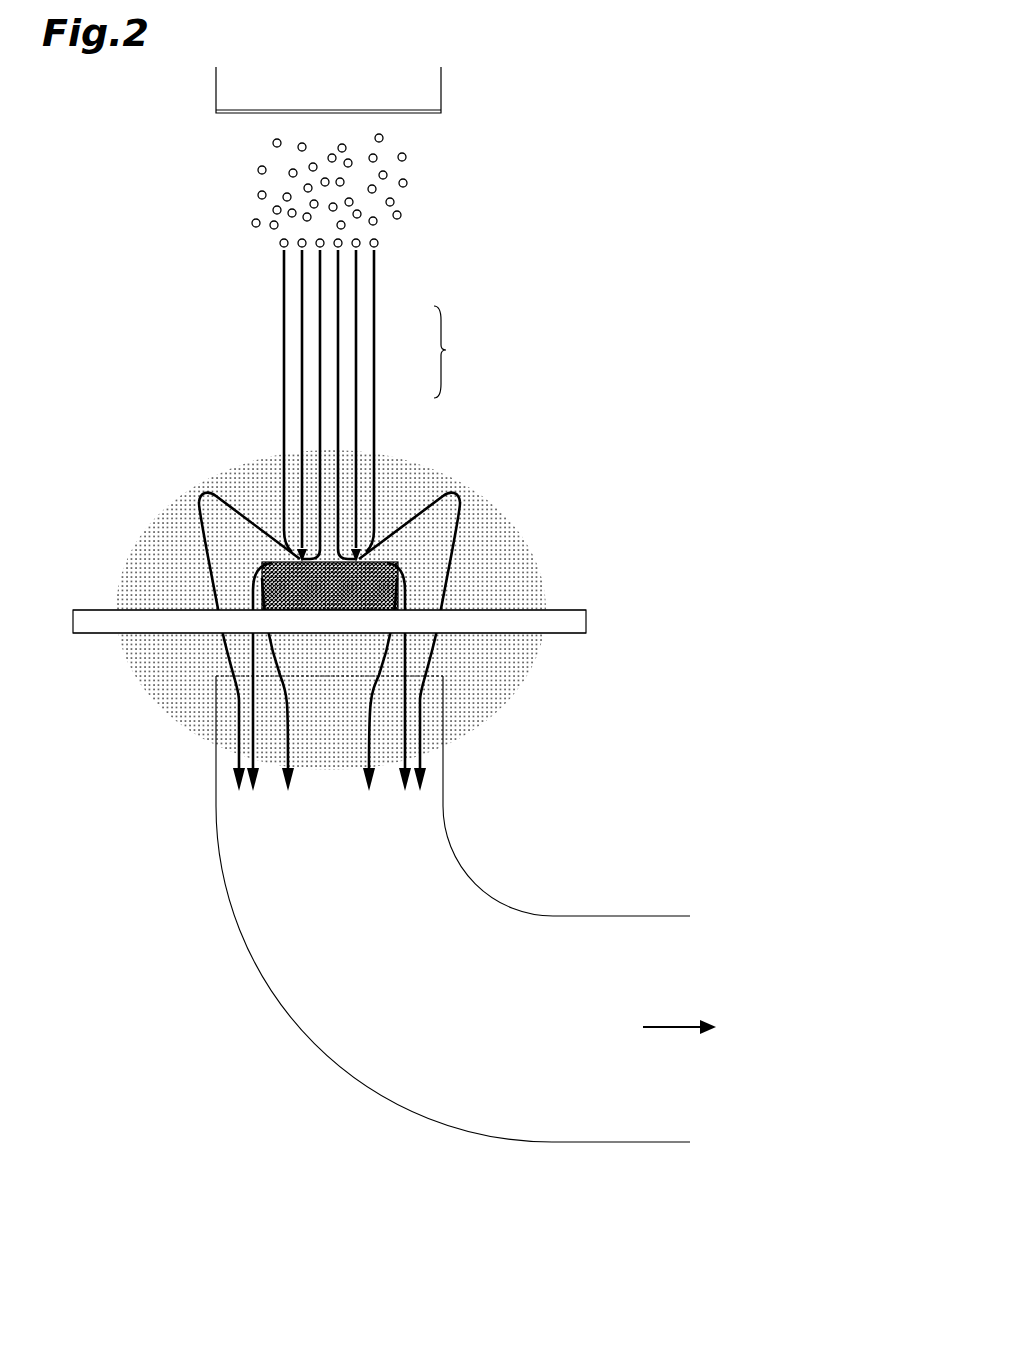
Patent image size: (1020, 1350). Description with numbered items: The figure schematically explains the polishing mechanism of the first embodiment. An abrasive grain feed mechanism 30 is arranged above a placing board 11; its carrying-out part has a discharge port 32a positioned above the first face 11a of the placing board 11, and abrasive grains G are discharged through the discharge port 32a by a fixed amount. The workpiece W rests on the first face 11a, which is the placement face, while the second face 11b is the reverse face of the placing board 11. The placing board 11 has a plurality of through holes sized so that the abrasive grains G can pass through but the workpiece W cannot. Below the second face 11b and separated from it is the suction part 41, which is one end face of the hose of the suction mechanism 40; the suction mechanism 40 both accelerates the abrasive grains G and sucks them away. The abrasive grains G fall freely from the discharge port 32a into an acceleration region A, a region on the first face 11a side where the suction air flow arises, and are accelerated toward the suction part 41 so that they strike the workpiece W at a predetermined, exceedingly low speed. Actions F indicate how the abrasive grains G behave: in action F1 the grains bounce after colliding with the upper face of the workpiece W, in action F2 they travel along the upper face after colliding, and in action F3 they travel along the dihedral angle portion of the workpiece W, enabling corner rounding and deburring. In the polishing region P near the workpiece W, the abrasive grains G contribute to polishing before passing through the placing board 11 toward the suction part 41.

The abrasive grain feed mechanism 30 is at (420, 92).
The discharge port 32a is at (230, 113).
The abrasive grains G is at (379, 243).
The action F1 is at (357, 320).
The action F2 is at (339, 348).
The action F3 is at (375, 380).
The actions F is at (447, 352).
The polishing region P is at (422, 553).
The acceleration region A is at (489, 548).
The workpiece W is at (356, 613).
The placing board 11 is at (576, 621).
The first face 11a is at (84, 609).
The second face 11b is at (119, 634).
The suction mechanism 40 is at (512, 909).
The suction part 41 is at (328, 674).